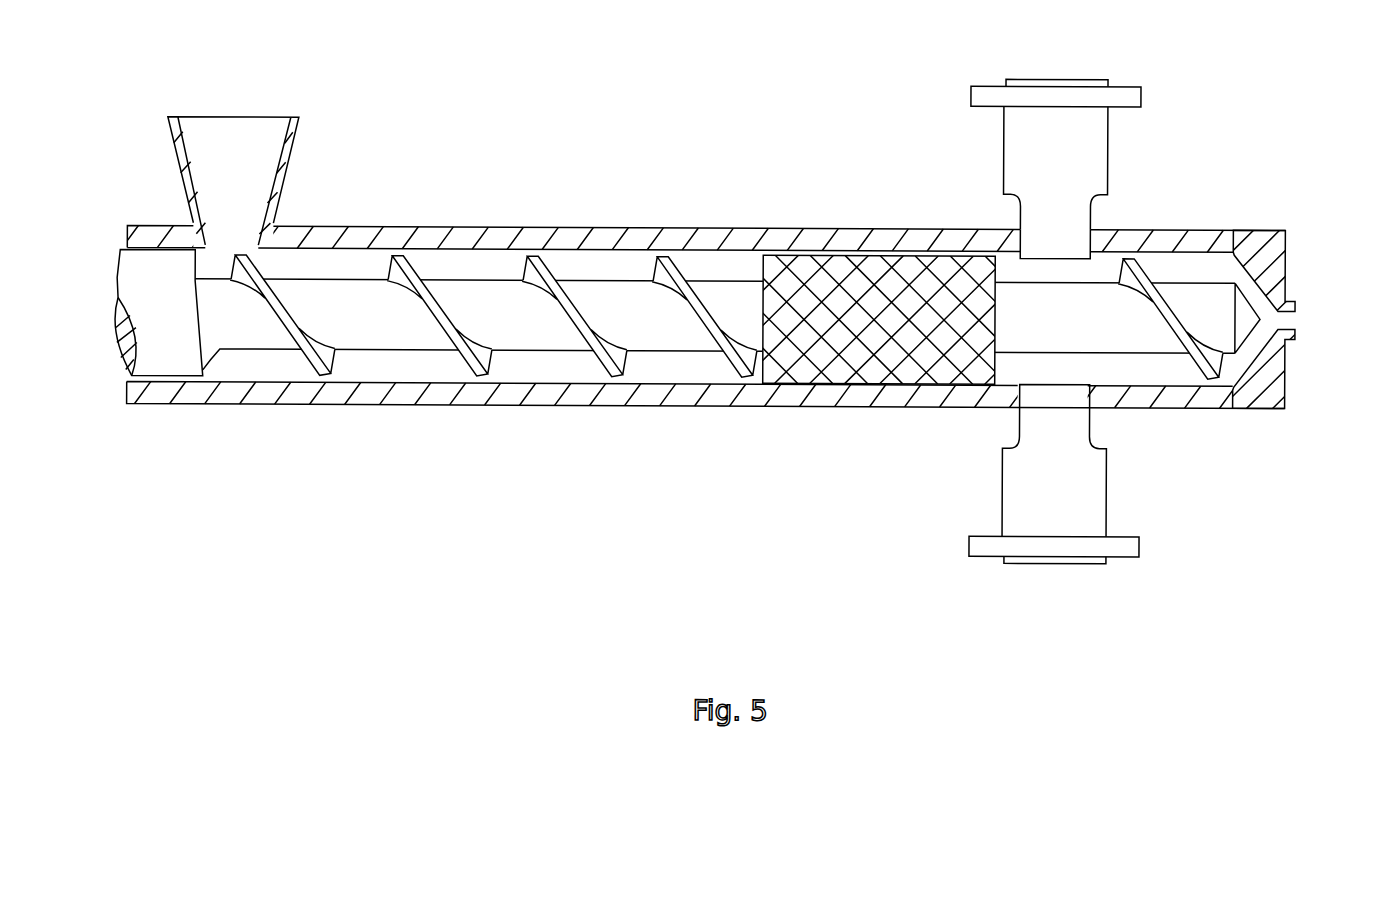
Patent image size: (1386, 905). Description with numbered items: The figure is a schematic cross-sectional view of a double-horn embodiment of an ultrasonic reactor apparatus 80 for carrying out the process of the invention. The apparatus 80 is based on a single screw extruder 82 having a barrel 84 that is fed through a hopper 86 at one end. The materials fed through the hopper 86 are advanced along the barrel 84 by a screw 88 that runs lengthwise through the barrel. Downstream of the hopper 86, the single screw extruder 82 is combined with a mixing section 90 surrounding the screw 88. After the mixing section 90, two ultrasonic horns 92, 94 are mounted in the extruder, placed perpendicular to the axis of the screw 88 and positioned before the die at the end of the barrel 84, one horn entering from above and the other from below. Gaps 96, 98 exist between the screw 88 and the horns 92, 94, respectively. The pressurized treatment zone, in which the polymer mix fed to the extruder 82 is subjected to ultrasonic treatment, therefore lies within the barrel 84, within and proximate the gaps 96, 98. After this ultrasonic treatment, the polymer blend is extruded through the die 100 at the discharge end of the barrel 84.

The apparatus 80 is at (659, 203).
The single screw extruder 82 is at (687, 324).
The barrel 84 is at (445, 237).
The hopper 86 is at (253, 177).
The screw 88 is at (372, 318).
The mixing section 90 is at (833, 273).
The ultrasonic horn 92 is at (1053, 442).
The ultrasonic horn 94 is at (1055, 243).
The gap 96 is at (1055, 272).
The gap 98 is at (1053, 368).
The die 100 is at (1275, 363).